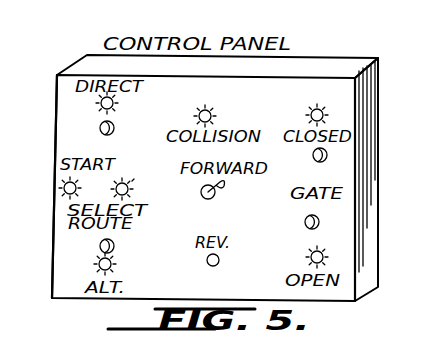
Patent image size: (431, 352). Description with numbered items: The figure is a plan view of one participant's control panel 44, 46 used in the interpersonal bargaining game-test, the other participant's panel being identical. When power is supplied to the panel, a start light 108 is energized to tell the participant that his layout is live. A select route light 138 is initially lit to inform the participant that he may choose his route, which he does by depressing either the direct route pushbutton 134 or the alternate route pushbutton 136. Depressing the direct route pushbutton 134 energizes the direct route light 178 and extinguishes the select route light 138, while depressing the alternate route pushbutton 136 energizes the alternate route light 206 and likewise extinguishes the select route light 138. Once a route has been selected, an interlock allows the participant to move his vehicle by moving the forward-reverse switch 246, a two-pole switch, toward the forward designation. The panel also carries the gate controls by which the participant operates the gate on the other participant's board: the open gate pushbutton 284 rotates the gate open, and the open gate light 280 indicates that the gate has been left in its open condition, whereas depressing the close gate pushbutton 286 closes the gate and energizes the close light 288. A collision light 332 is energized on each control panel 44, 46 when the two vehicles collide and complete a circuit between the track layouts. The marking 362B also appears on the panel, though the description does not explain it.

The control panel 44 is at (203, 167).
The control panel 46 is at (219, 167).
The direct route light 178 is at (119, 105).
The direct route pushbutton 134 is at (102, 133).
The collision light 332 is at (219, 110).
The close light 288 is at (325, 100).
The close gate pushbutton 286 is at (316, 161).
The start light 108 is at (58, 193).
The select route light 138 is at (130, 180).
The forward-reverse switch 246 is at (211, 202).
The alternate route pushbutton 136 is at (115, 243).
The alternate route light 206 is at (113, 263).
The open gate pushbutton 284 is at (305, 229).
The open gate light 280 is at (327, 257).
The panel 362B is at (28, 186).